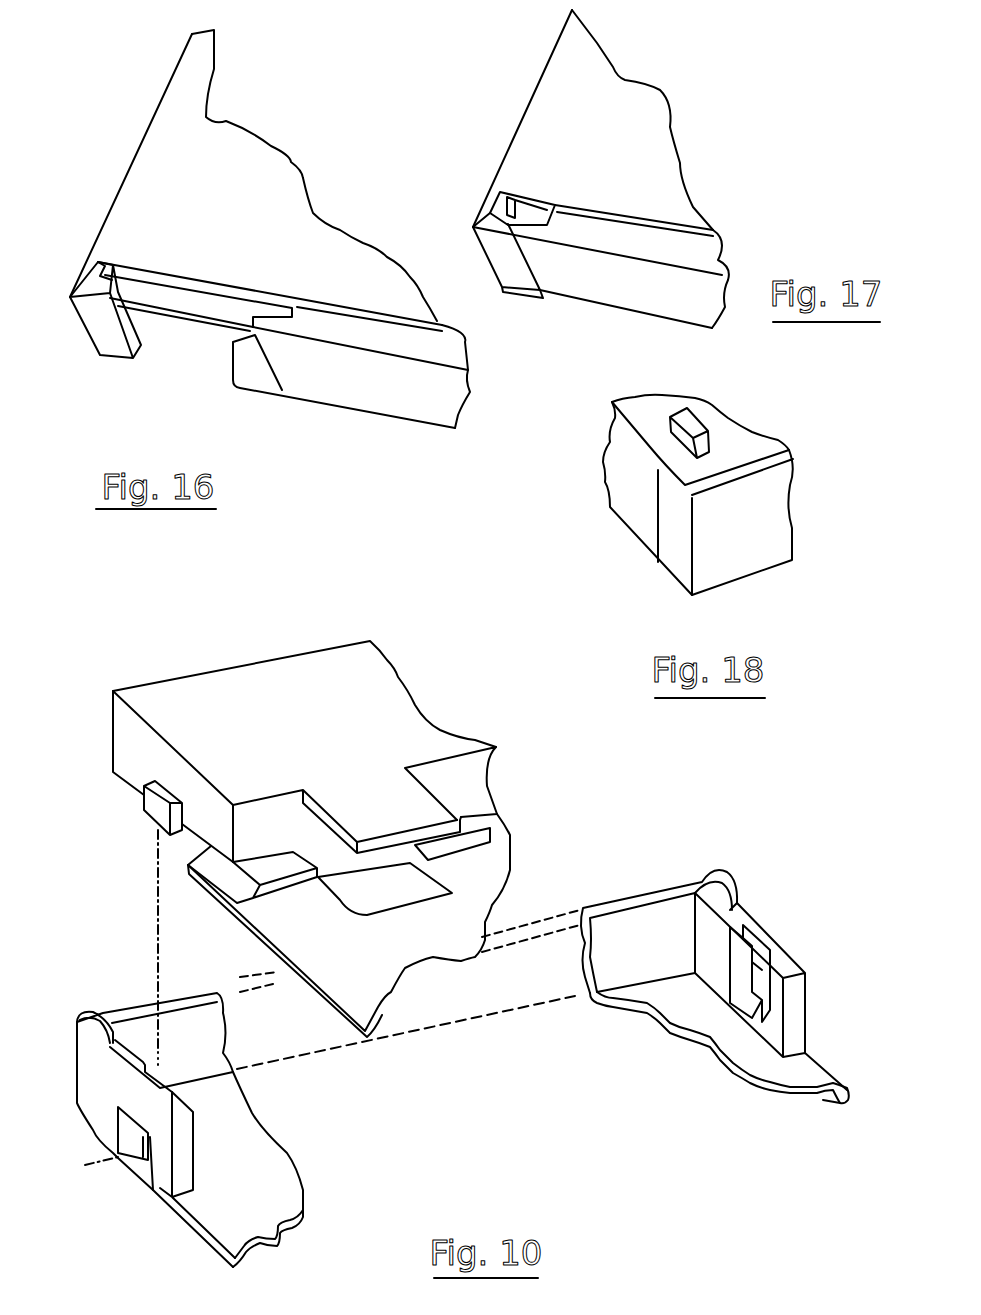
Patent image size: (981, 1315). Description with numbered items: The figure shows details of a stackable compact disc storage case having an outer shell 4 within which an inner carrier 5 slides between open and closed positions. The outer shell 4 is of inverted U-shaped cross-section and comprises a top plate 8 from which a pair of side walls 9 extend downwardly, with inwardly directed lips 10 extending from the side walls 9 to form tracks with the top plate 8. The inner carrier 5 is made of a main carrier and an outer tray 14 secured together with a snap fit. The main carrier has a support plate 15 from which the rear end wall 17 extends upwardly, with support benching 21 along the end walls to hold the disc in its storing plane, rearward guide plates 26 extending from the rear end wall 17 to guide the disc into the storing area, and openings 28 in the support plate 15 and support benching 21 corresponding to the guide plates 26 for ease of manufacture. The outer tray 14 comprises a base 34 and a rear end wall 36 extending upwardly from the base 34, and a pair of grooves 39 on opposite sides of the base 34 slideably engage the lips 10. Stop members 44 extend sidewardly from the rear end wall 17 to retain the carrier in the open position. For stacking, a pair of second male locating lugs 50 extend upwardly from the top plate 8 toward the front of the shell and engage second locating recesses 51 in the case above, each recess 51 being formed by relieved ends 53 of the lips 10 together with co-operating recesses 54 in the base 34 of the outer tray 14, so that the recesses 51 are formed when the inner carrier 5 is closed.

In FIG. 16, the outer shell 4 is at (345, 392).
In FIG. 17, the outer shell 4 is at (605, 295).
In FIG. 18, the outer shell 4 is at (642, 408).
In FIG. 16, the inner carrier 5 is at (203, 68).
In FIG. 17, the inner carrier 5 is at (670, 143).
In FIG. 18, the inner carrier 5 is at (747, 543).
In FIG. 16, the top plate 8 is at (242, 362).
In FIG. 17, the top plate 8 is at (522, 302).
In FIG. 18, the top plate 8 is at (755, 437).
In FIG. 16, the side walls 9 is at (418, 405).
In FIG. 17, the side walls 9 is at (568, 290).
In FIG. 18, the side walls 9 is at (628, 500).
In FIG. 16, the lips 10 is at (443, 337).
In FIG. 17, the lips 10 is at (710, 257).
In FIG. 16, the outer tray 14 is at (312, 220).
In FIG. 10, the support plate 15 is at (290, 928).
In FIG. 10, the rear end wall 17 is at (300, 683).
In FIG. 10, the support benching 21 is at (273, 870).
In FIG. 10, the rearward guide plates 26 is at (384, 796).
In FIG. 10, the openings 28 is at (508, 870).
In FIG. 16, the base 34 is at (205, 118).
In FIG. 17, the base 34 is at (617, 83).
In FIG. 10, the base 34 is at (815, 1073).
In FIG. 10, the rear end wall 36 is at (645, 928).
In FIG. 16, the grooves 39 is at (197, 297).
In FIG. 10, the stop members 44 is at (185, 1163).
In FIG. 18, the second male locating lugs 50 is at (692, 418).
In FIG. 17, the second locating recesses 51 is at (527, 200).
In FIG. 16, the relieved ends of the lips 53 is at (284, 310).
In FIG. 17, the relieved ends of the lips 53 is at (540, 207).
In FIG. 16, the co-operating recesses 54 is at (97, 278).
In FIG. 17, the co-operating recesses 54 is at (498, 203).